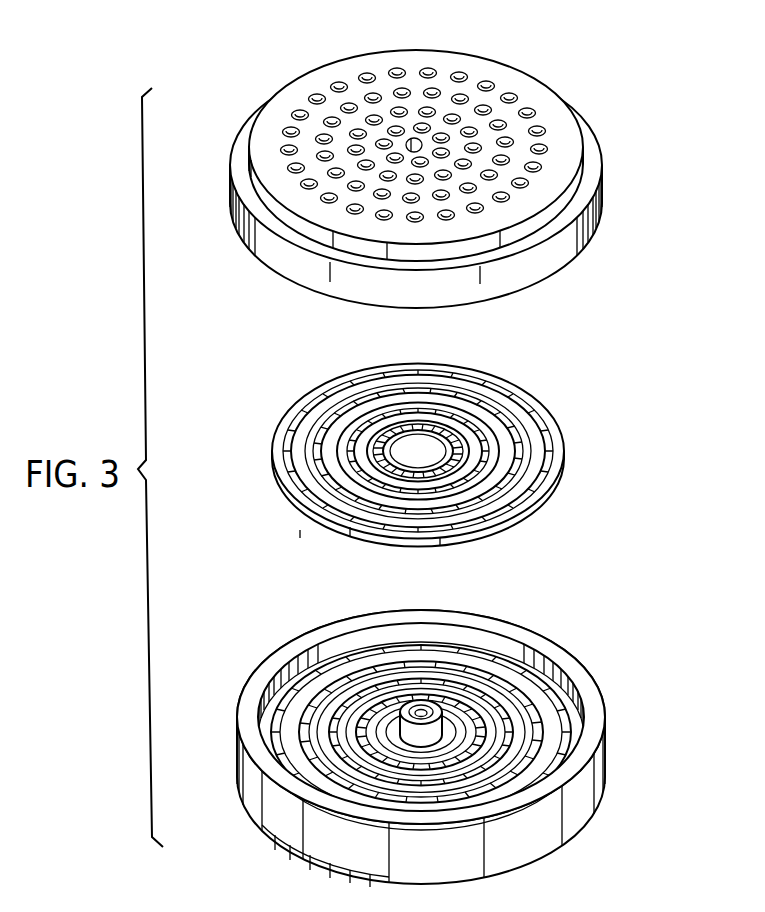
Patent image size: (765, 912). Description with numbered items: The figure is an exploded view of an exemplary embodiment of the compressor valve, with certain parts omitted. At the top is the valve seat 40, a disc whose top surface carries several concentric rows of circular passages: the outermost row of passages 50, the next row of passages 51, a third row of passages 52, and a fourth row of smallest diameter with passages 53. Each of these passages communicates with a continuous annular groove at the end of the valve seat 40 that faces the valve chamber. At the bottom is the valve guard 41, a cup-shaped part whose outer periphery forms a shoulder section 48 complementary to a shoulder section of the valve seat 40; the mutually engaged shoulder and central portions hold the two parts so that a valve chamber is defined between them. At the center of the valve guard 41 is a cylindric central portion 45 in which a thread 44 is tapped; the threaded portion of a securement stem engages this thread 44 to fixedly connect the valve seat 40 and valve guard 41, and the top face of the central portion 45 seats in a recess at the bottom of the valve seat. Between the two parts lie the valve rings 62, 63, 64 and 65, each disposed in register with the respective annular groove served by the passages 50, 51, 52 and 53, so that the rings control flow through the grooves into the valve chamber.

The valve seat 40 is at (439, 156).
The valve guard 41 is at (382, 728).
The thread 44 is at (418, 711).
The cylindric central portion 45 is at (463, 718).
The shoulder section 48 is at (310, 637).
The passages 50 is at (338, 84).
The passages 51 is at (373, 96).
The passages 52 is at (355, 130).
The passages 53 is at (414, 138).
The valve ring 62 is at (386, 435).
The valve ring 63 is at (333, 403).
The valve ring 64 is at (392, 410).
The valve ring 65 is at (427, 425).